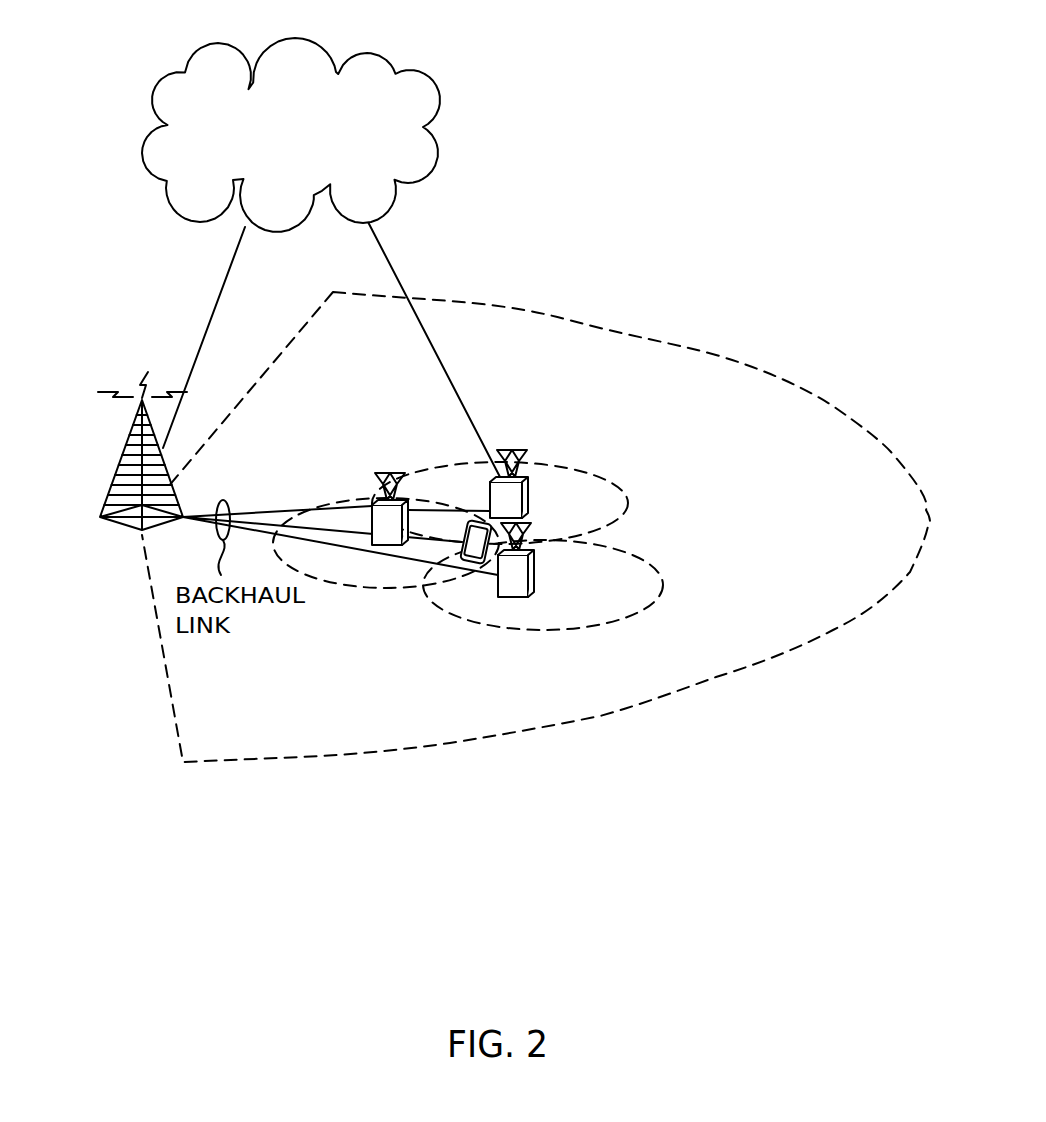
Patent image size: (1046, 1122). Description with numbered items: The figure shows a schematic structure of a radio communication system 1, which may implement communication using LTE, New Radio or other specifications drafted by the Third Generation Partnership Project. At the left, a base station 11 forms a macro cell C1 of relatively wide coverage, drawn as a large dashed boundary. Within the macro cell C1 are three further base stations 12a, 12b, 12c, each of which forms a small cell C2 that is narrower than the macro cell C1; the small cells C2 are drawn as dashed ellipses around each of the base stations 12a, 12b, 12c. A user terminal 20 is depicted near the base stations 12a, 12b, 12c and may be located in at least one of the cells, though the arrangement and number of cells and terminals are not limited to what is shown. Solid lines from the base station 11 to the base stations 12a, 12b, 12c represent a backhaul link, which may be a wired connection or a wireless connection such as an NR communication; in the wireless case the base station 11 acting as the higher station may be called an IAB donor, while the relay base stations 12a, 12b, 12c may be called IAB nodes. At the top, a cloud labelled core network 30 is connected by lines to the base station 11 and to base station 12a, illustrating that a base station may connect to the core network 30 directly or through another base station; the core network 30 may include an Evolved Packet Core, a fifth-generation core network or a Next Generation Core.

The radio communication system 1 is at (631, 164).
The base station 11 is at (122, 460).
The base station 12a is at (537, 490).
The base station 12b is at (510, 597).
The base station 12c is at (370, 497).
The user terminal 20 is at (462, 557).
The core network 30 is at (370, 52).
The macro cell C1 is at (716, 355).
The small cell C2 is at (343, 588).